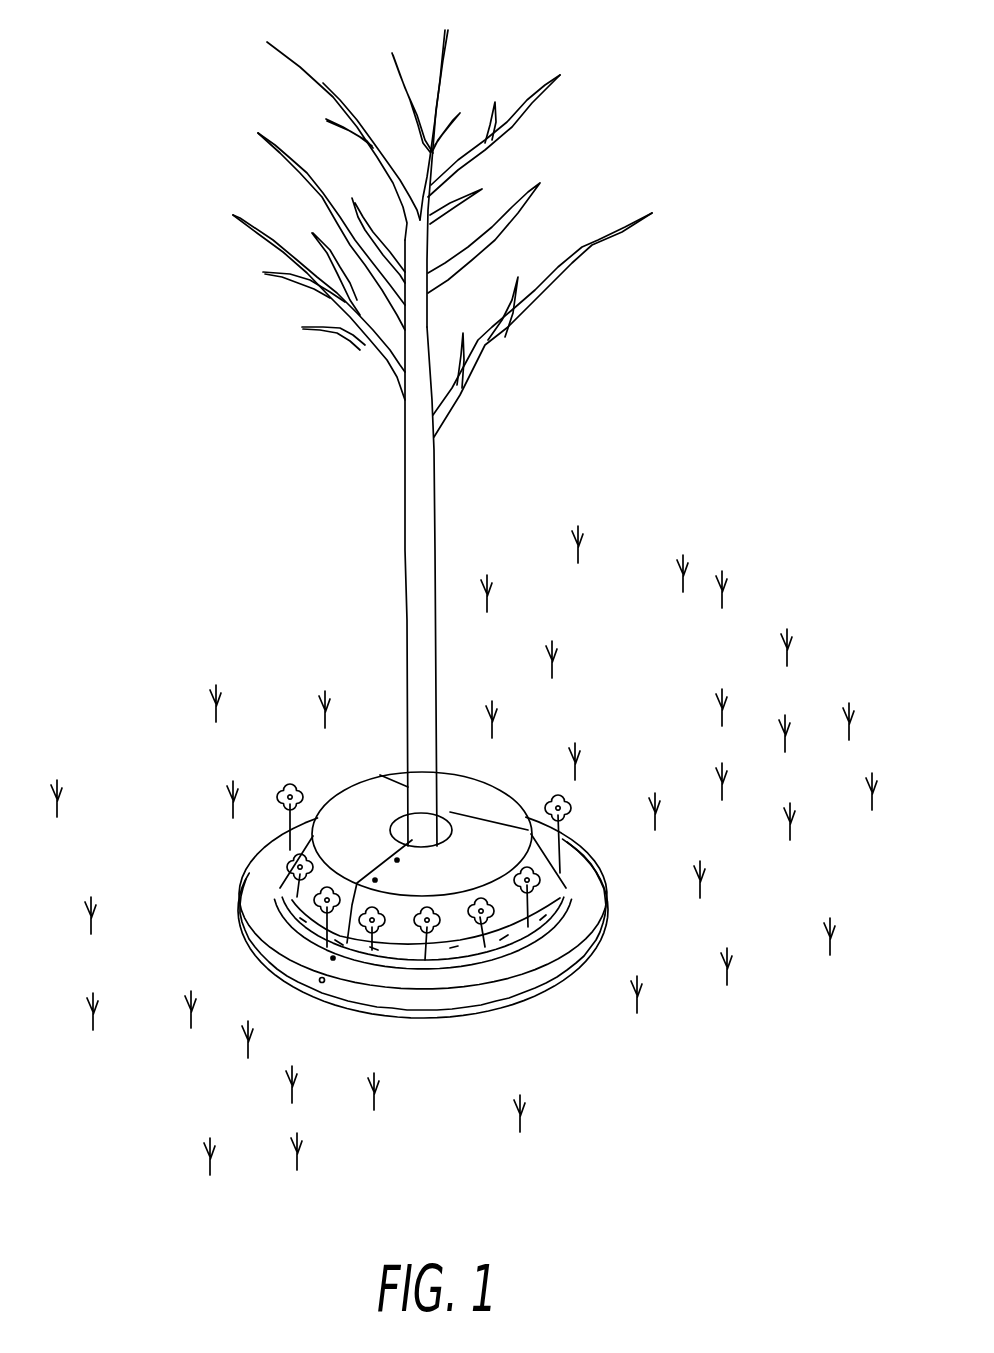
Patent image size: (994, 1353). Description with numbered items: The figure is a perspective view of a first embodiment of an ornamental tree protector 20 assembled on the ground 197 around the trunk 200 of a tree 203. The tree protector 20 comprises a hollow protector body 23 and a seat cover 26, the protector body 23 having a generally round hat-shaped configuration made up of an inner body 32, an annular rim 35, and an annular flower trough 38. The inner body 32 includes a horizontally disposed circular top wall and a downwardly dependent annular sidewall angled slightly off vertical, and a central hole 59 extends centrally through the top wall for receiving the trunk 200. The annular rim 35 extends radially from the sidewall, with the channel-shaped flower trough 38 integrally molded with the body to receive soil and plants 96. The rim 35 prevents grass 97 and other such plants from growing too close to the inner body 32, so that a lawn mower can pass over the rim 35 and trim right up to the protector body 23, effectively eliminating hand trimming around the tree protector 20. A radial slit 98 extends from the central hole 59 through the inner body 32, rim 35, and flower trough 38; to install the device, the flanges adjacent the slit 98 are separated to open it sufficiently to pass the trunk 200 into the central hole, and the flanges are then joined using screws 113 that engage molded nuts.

The tree 203 is at (575, 343).
The trunk 200 is at (408, 651).
The ornamental tree protector 20 is at (411, 838).
The protector body 23 is at (347, 783).
The seat cover 26 is at (492, 787).
The inner body 32 is at (366, 783).
The central hole 59 is at (457, 778).
The radial slit 98 is at (378, 860).
The plants 96 is at (284, 790).
The annular flower trough 38 is at (283, 893).
The annular rim 35 is at (248, 942).
The screws 113 is at (320, 982).
The grass 97 is at (552, 672).
The ground 197 is at (680, 912).